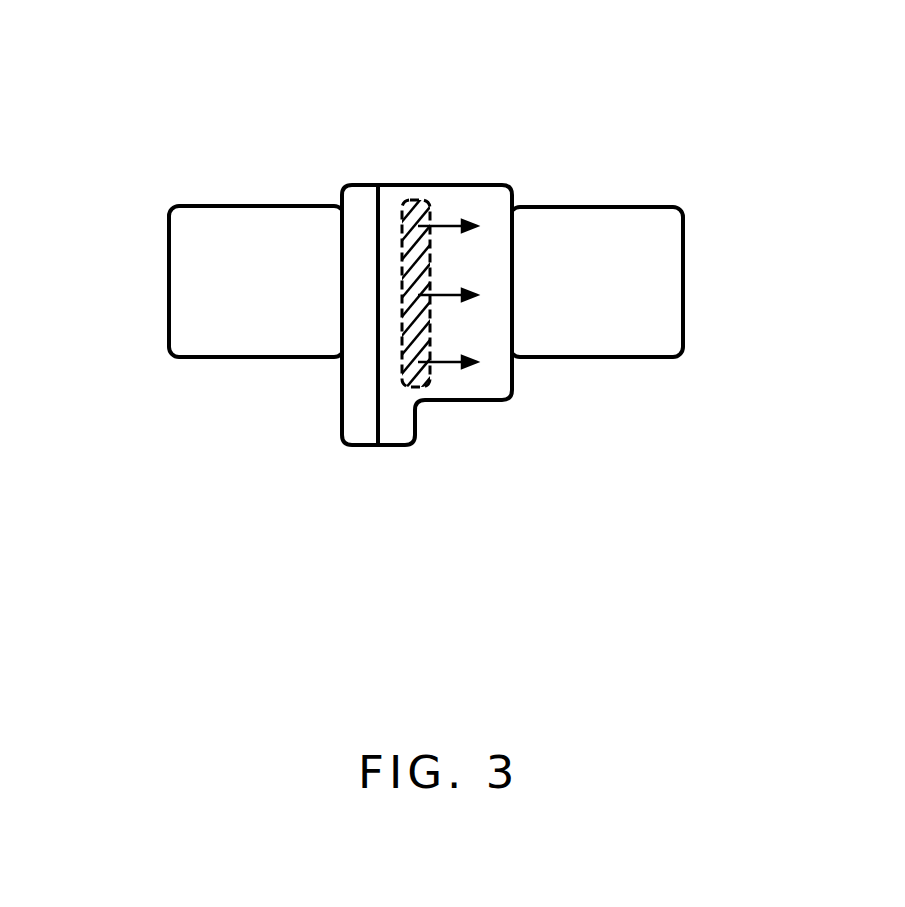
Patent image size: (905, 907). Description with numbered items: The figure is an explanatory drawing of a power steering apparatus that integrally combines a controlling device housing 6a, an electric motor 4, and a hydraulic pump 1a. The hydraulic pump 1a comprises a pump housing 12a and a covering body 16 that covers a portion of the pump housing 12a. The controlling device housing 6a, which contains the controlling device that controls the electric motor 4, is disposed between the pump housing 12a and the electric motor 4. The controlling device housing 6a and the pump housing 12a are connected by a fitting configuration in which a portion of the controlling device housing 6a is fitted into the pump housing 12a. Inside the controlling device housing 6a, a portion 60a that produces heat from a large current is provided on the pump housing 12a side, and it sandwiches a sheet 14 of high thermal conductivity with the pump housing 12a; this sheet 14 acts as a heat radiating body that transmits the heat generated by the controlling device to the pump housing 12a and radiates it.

The hydraulic pump 1a is at (643, 85).
The electric motor 4 is at (192, 281).
The controlling device housing 6a is at (352, 423).
The pump housing 12a is at (466, 346).
The sheet 14 is at (417, 220).
The covering body 16 is at (670, 282).
The heat producing portion 60a is at (424, 239).